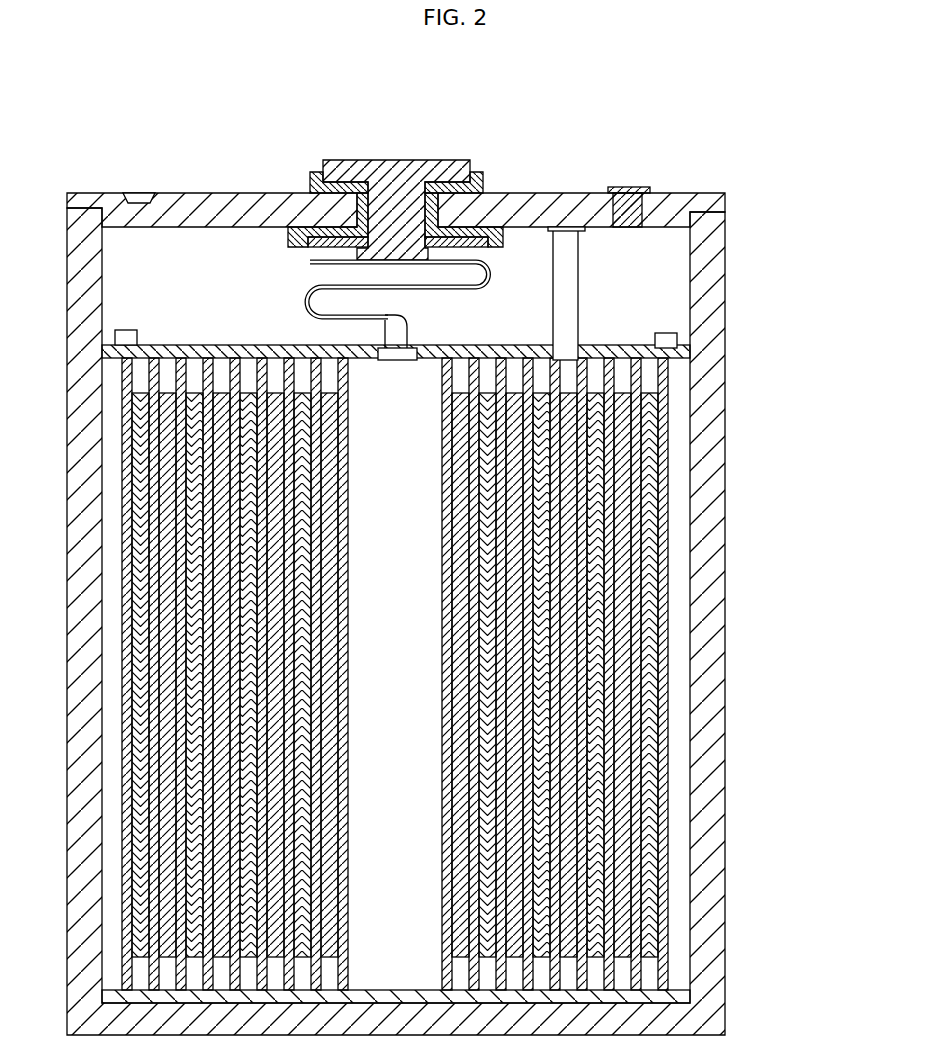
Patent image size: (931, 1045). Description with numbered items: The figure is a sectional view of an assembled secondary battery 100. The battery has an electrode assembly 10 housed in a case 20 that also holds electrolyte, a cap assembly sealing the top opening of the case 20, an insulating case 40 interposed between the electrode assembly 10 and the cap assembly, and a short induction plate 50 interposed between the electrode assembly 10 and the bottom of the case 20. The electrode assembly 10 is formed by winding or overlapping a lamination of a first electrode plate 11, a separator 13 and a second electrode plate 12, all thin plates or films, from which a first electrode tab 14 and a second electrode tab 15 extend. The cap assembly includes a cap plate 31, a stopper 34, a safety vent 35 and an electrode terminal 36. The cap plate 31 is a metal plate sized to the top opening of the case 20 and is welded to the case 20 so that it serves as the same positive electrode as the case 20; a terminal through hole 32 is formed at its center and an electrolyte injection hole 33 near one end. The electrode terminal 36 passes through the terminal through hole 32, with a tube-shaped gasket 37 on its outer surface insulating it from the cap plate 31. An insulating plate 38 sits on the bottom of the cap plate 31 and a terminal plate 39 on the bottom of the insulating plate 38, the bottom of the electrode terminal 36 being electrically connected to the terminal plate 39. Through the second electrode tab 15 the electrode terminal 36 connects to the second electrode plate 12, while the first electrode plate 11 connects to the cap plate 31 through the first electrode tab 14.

The secondary battery 100 is at (748, 168).
The electrode assembly 10 is at (810, 590).
The first electrode plate 11 is at (650, 593).
The second electrode plate 12 is at (618, 680).
The separator 13 is at (638, 632).
The first electrode tab 14 is at (570, 281).
The second electrode tab 15 is at (310, 301).
The case 20 is at (712, 437).
The cap plate 31 is at (102, 198).
The terminal through hole 32 is at (440, 232).
The electrolyte injection hole 33 is at (645, 232).
The stopper 34 is at (630, 188).
The safety vent 35 is at (138, 193).
The electrode terminal 36 is at (398, 170).
The gasket 37 is at (480, 172).
The insulating plate 38 is at (280, 225).
The terminal plate 39 is at (305, 249).
The insulating case 40 is at (688, 348).
The short induction plate 50 is at (688, 997).